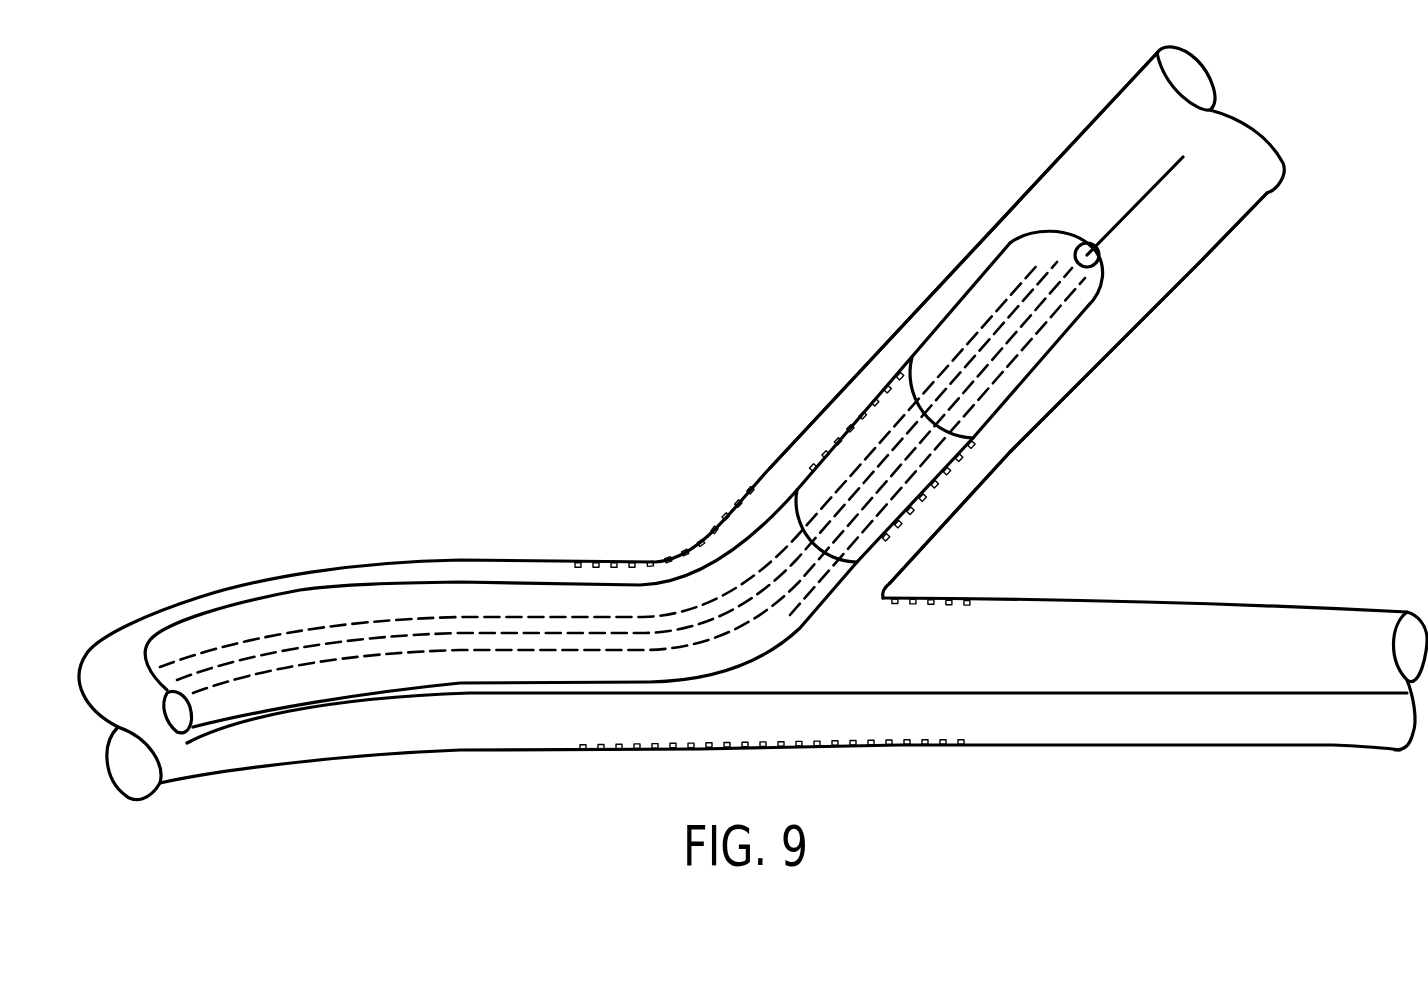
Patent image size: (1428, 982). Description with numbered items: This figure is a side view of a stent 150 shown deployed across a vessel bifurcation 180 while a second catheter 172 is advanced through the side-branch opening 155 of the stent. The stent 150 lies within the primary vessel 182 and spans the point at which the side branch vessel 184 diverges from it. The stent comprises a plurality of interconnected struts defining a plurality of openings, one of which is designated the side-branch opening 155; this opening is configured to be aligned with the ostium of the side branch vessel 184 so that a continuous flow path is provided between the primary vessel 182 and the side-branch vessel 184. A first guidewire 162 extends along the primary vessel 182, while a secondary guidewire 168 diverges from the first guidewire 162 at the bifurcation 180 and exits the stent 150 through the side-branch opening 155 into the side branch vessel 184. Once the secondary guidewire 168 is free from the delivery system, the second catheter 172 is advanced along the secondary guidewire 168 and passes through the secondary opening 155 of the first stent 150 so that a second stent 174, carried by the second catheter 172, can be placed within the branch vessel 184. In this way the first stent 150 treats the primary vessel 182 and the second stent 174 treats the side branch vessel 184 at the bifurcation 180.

The stent 150 is at (937, 747).
The side-branch opening 155 is at (863, 582).
The first guidewire 162 is at (1180, 691).
The secondary guidewire 168 is at (1156, 178).
The second catheter 172 is at (464, 590).
The second stent 174 is at (858, 420).
The vessel bifurcation 180 is at (952, 547).
The primary vessel 182 is at (493, 746).
The side branch vessel 184 is at (1069, 149).